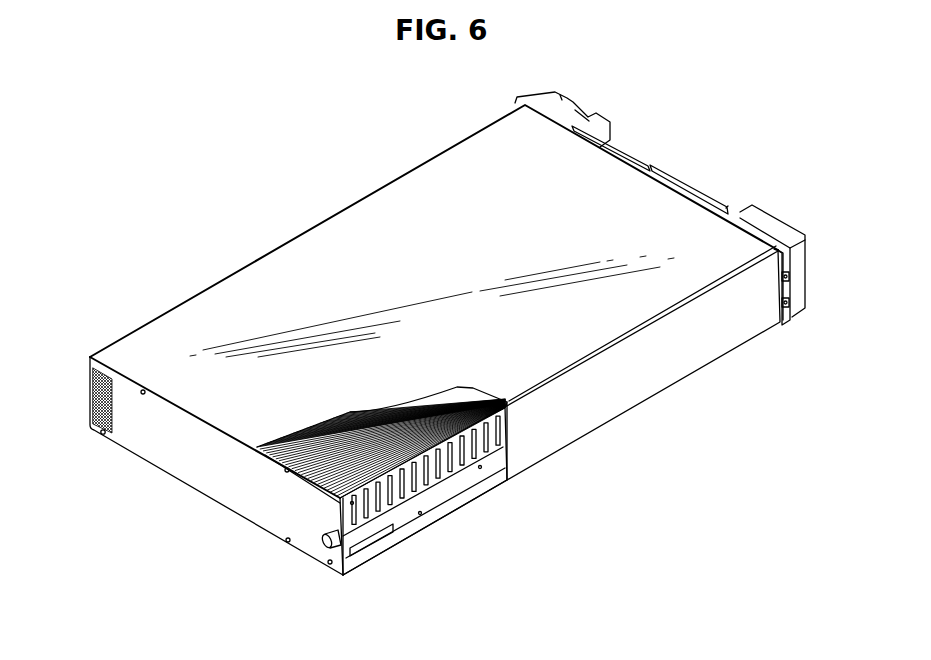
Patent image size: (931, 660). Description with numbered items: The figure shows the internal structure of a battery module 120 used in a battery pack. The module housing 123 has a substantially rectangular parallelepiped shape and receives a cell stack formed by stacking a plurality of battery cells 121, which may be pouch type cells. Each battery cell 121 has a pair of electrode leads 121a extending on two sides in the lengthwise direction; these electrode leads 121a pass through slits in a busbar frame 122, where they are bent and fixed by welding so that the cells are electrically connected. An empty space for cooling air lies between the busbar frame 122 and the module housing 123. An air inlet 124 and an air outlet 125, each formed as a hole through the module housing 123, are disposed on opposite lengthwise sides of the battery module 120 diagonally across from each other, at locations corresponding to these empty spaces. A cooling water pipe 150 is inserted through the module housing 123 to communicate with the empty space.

The battery module 120 is at (272, 203).
The battery cell 121 is at (283, 402).
The electrode lead 121a is at (447, 457).
The busbar frame 122 is at (489, 400).
The module housing 123 is at (173, 307).
The air inlet 124 is at (787, 223).
The air outlet 125 is at (95, 398).
The cooling water pipe 150 is at (322, 541).